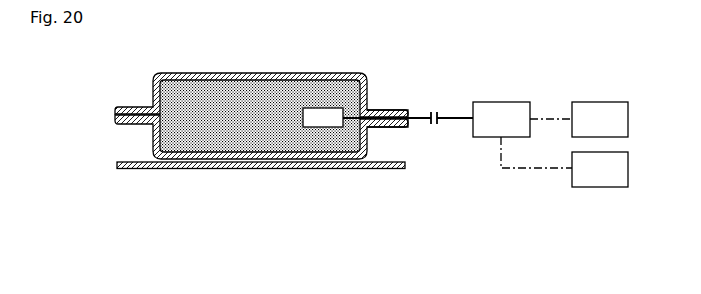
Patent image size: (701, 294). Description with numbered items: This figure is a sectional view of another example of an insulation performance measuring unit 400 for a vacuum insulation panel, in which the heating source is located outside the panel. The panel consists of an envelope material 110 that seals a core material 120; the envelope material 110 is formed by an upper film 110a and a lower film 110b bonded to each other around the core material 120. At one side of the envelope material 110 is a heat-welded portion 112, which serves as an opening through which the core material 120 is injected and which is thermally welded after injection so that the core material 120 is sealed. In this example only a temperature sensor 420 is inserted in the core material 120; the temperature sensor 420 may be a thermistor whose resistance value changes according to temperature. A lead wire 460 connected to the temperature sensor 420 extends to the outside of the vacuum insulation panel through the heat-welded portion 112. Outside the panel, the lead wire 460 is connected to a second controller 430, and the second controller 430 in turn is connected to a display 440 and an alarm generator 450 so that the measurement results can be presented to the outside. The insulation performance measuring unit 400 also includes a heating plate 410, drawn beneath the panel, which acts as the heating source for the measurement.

The envelope material 110 is at (66, 83).
The upper film 110a is at (153, 94).
The lower film 110b is at (153, 140).
The core material 120 is at (247, 88).
The heat-welded portion 112 is at (387, 110).
The heating plate 410 is at (287, 169).
The temperature sensor 420 is at (325, 127).
The lead wire 460 is at (455, 118).
The second controller 430 is at (503, 102).
The display 440 is at (602, 102).
The alarm generator 450 is at (600, 187).
The insulation performance measuring unit 400 is at (277, 236).